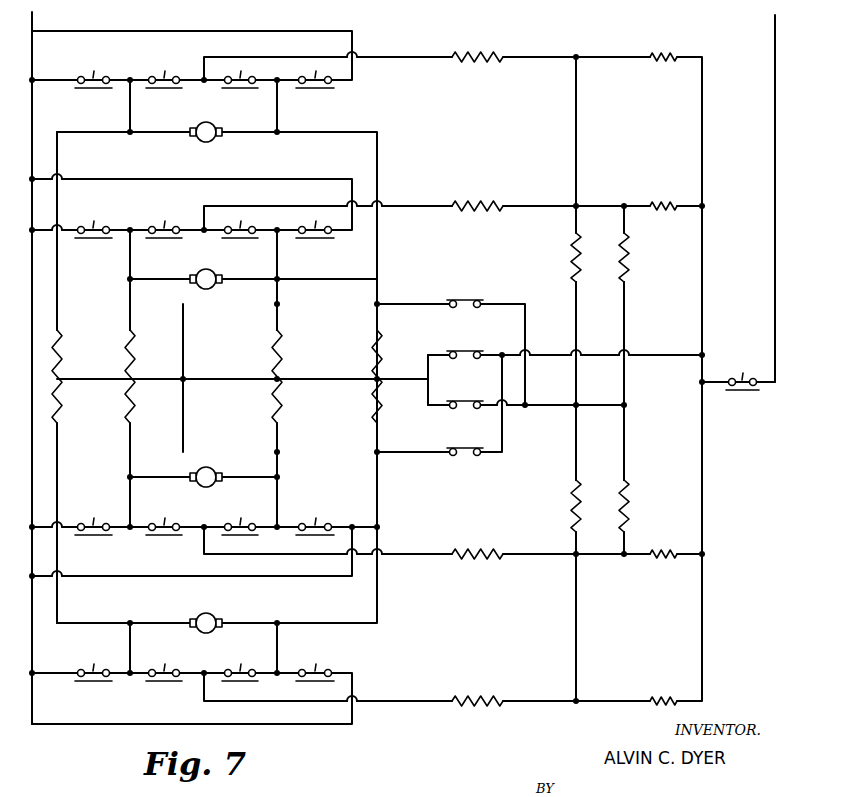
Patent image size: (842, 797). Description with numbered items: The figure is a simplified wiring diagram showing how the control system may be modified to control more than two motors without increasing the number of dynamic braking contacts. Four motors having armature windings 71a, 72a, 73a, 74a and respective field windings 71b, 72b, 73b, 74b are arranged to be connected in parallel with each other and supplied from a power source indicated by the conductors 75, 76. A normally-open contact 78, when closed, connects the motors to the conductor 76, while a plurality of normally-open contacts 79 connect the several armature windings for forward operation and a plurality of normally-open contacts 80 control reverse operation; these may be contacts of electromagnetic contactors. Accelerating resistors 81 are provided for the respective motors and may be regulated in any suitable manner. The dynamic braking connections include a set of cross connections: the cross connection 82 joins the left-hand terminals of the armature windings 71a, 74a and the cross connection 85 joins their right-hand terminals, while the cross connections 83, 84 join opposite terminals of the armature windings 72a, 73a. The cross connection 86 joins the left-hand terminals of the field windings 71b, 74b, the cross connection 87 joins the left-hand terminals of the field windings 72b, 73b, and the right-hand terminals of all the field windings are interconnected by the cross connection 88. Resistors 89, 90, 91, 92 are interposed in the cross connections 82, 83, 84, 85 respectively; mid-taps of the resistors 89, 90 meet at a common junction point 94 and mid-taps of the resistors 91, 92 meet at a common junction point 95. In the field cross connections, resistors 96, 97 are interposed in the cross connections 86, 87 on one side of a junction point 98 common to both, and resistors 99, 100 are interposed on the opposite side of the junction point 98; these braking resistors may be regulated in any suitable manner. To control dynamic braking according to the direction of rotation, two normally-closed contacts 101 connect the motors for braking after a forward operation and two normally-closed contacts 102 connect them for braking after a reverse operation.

The conductor 75 is at (32, 17).
The conductor 76 is at (775, 28).
The normally-open contact 78 is at (746, 379).
The normally-open contacts 79 is at (166, 366).
The normally-open contacts 80 is at (240, 366).
The accelerating resistors 81 is at (477, 697).
The armature winding 71a is at (213, 140).
The armature winding 72a is at (214, 270).
The armature winding 73a is at (216, 484).
The armature winding 74a is at (215, 614).
The field winding 71b is at (665, 65).
The field winding 72b is at (661, 201).
The field winding 73b is at (670, 560).
The field winding 74b is at (663, 697).
The cross connection 82 is at (57, 300).
The cross connection 83 is at (130, 300).
The cross connection 84 is at (277, 290).
The cross connection 85 is at (377, 280).
The cross connection 86 is at (580, 331).
The cross connection 87 is at (626, 331).
The cross connection 88 is at (704, 331).
The resistor 89 is at (60, 352).
The resistor 90 is at (133, 352).
The resistor 91 is at (280, 352).
The resistor 92 is at (374, 352).
The junction point 94 is at (198, 378).
The junction point 95 is at (428, 377).
The resistor 96 is at (573, 266).
The resistor 97 is at (627, 266).
The junction point 98 is at (575, 408).
The resistor 99 is at (573, 505).
The resistor 100 is at (627, 505).
The normally-closed contacts 101 is at (466, 352).
The normally-closed contacts 102 is at (466, 449).